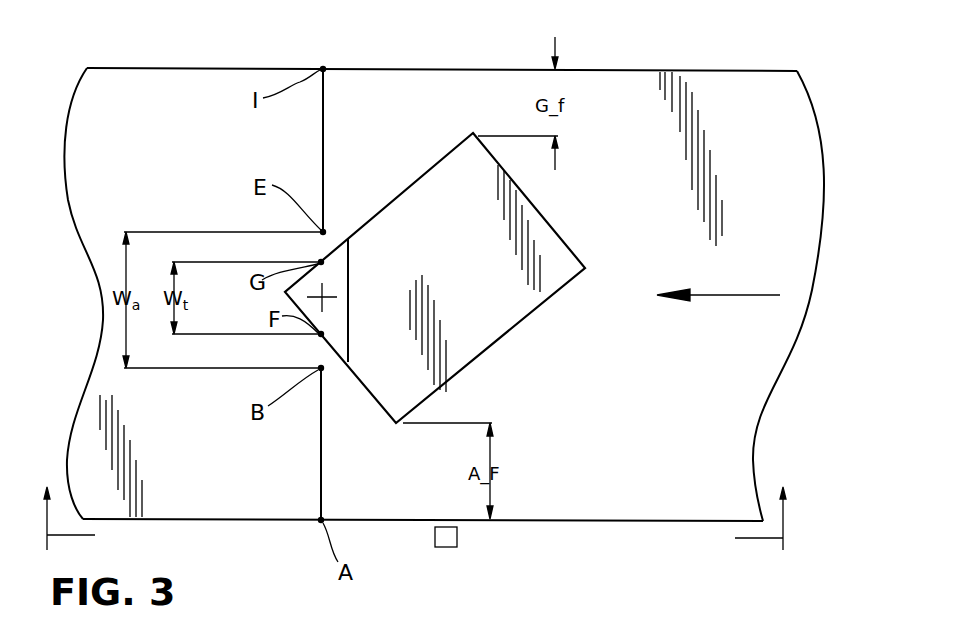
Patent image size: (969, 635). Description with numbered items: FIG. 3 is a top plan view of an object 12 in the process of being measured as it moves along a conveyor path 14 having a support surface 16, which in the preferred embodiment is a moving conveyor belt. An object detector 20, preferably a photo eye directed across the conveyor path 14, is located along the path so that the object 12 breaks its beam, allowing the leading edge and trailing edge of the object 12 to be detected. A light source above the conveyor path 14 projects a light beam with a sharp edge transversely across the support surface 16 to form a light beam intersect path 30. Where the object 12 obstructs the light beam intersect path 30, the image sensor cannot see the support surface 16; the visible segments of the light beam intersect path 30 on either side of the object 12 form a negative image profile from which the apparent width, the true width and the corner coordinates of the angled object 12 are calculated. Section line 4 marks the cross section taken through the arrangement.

The object 12 is at (435, 278).
The conveyor path 14 is at (773, 378).
The support surface 16 is at (692, 355).
The object detector 20 is at (458, 543).
The light beam intersect path 30 is at (323, 146).
The section line 4- 4 is at (414, 505).